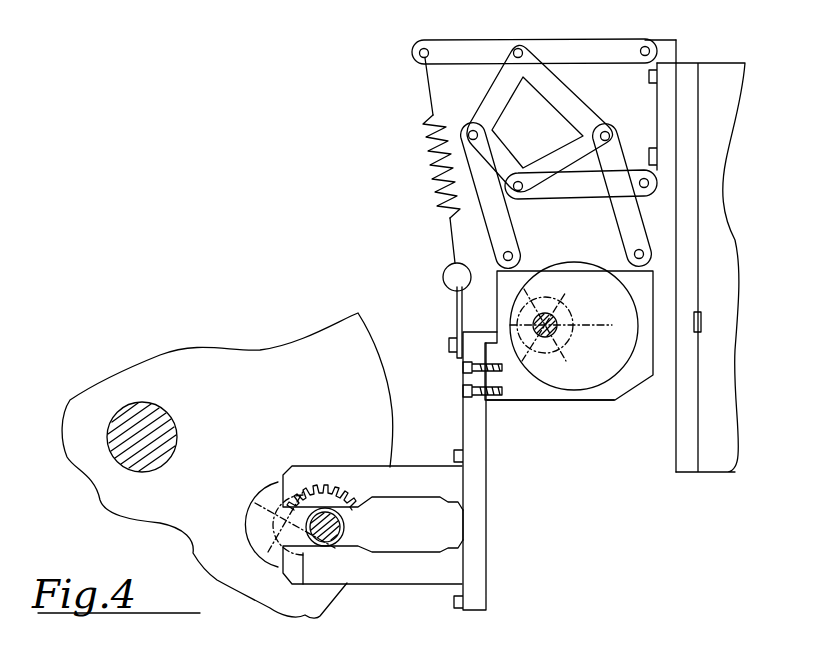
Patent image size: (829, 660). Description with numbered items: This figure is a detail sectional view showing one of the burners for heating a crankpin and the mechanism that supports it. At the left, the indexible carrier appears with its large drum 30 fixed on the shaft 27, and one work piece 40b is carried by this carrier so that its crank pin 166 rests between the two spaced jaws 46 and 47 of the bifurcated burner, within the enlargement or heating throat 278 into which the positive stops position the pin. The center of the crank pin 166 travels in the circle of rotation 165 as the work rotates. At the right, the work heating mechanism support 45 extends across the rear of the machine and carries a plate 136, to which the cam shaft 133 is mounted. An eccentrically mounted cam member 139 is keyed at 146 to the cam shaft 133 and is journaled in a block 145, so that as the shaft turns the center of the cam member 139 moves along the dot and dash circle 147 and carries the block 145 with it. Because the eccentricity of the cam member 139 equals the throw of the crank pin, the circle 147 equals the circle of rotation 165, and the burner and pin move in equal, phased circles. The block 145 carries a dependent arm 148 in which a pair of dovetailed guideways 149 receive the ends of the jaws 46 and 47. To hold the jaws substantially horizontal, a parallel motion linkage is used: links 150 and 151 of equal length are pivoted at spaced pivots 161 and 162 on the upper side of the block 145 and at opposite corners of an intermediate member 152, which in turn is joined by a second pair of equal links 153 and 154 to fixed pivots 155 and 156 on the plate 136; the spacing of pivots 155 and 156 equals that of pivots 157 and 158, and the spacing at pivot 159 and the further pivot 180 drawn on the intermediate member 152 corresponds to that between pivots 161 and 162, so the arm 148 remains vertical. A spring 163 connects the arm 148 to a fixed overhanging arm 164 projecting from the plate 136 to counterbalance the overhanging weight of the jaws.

The shaft 27 is at (122, 418).
The drum 30 is at (375, 357).
The work piece 40b is at (267, 537).
The work heating mechanism support 45 is at (717, 463).
The burner jaw 46 is at (408, 473).
The burner jaw 47 is at (402, 572).
The cam shaft 133 is at (554, 317).
The plate 136 is at (678, 462).
The cam member 139 is at (593, 378).
The block 145 is at (532, 394).
The key 146 is at (533, 325).
The dot and dash circle 147 is at (571, 338).
The dependent arm 148 is at (477, 518).
The dovetailed guideways 149 is at (458, 533).
The parallel link 150 is at (503, 232).
The parallel link 151 is at (622, 220).
The intermediate member 152 is at (580, 110).
The parallel link 153 is at (596, 46).
The parallel link 154 is at (567, 188).
The fixed pivot 155 is at (647, 46).
The fixed pivot 156 is at (647, 188).
The pivot 157 is at (521, 46).
The pivot 158 is at (519, 181).
The pivot 159 is at (487, 131).
The pivot 161 is at (513, 250).
The pivot 162 is at (633, 247).
The spring 163 is at (433, 193).
The overhanging arm 164 is at (457, 48).
The circle of rotation 165 is at (302, 575).
The crank pin 166 is at (330, 535).
The pivot 180 is at (607, 132).
The heating throat 278 is at (328, 485).